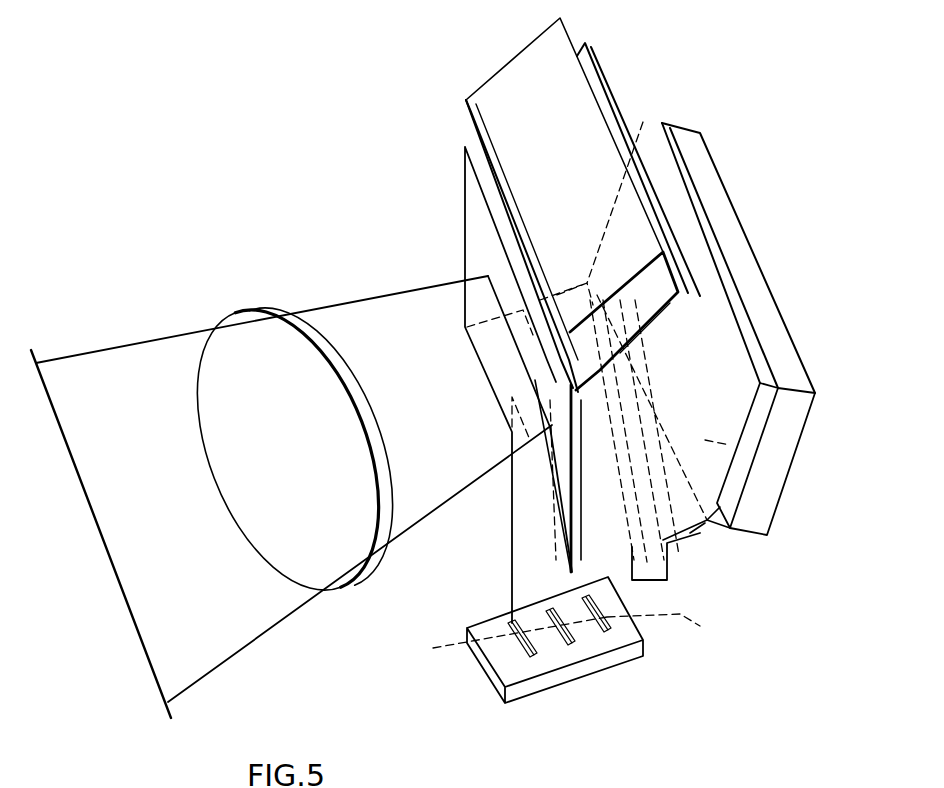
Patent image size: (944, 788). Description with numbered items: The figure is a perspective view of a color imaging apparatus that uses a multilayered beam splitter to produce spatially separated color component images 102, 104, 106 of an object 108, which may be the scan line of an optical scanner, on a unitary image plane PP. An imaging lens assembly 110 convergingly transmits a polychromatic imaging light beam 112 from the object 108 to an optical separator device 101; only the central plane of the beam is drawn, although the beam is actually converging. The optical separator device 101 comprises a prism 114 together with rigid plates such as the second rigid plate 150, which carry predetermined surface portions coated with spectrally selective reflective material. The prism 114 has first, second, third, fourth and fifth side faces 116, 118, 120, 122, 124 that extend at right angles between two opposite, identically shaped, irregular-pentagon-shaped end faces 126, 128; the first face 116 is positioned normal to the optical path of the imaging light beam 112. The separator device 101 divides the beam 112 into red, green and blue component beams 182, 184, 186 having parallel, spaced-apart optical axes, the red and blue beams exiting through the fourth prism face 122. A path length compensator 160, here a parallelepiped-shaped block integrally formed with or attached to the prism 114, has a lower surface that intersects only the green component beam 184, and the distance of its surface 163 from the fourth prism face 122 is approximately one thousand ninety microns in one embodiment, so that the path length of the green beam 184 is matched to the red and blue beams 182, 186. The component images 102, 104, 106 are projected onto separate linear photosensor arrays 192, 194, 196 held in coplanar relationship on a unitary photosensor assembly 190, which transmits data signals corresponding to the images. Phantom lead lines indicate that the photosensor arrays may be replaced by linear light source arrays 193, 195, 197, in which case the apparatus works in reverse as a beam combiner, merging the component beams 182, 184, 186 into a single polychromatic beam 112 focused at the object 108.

The optical separator device 101 is at (446, 128).
The color component image 102 is at (578, 630).
The color component image 104 is at (592, 642).
The color component image 106 is at (560, 630).
The object 108 is at (42, 360).
The imaging lens assembly 110 is at (250, 312).
The polychromatic imaging light beam 112 is at (133, 360).
The prism 114 is at (460, 203).
The first face 116 is at (482, 262).
The second face 118 is at (723, 440).
The third face 120 is at (680, 275).
The fourth face 122 is at (455, 366).
The fifth face 124 is at (705, 287).
The end face 126 is at (717, 373).
The end face 128 is at (492, 238).
The second rigid plate 150 is at (500, 62).
The path length compensator 160 is at (676, 540).
The surface 163 is at (609, 428).
The component beam 182 is at (598, 610).
The component beam 184 is at (630, 630).
The component beam 186 is at (552, 650).
The photosensor assembly 190 is at (547, 665).
The linear photosensor array 192 is at (602, 620).
The linear light source array 193 is at (712, 633).
The linear photosensor array 194 is at (590, 640).
The linear light source array 195 is at (585, 600).
The linear photosensor array 196 is at (545, 695).
The linear light source array 197 is at (541, 647).
The unitary image plane PP is at (714, 658).